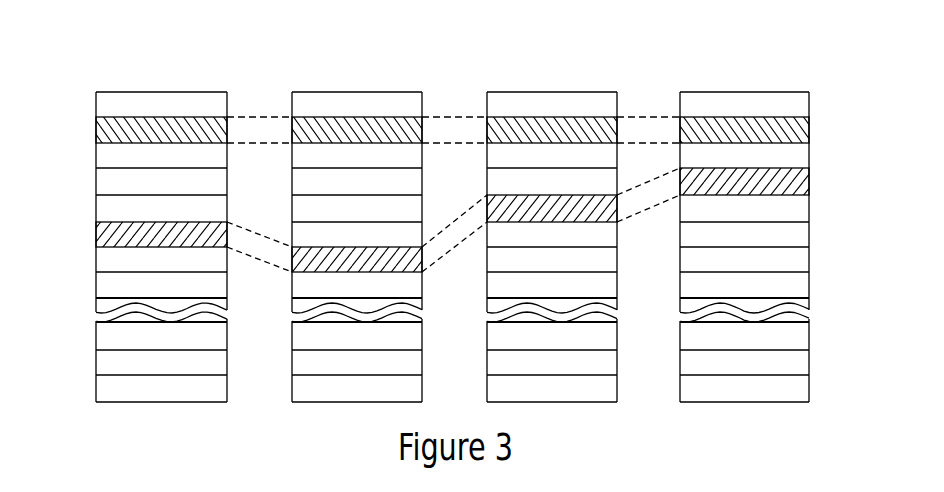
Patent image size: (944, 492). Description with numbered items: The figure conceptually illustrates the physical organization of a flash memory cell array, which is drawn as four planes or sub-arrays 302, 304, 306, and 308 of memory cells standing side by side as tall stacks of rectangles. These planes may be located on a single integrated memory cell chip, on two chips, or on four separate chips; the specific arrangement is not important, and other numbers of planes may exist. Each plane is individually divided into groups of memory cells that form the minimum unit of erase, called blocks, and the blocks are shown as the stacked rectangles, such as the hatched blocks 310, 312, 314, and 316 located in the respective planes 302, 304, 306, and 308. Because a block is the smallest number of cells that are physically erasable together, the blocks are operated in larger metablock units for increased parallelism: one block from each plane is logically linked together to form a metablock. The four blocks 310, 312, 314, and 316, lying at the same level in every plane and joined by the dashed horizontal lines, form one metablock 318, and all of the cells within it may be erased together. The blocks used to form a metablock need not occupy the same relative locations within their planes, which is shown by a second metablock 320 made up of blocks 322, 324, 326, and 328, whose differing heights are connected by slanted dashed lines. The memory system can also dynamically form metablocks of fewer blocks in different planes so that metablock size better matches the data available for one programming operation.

The plane 302 is at (139, 212).
The plane 304 is at (338, 212).
The plane 306 is at (527, 212).
The plane 308 is at (775, 212).
The block 310 is at (143, 132).
The block 312 is at (333, 132).
The block 314 is at (528, 132).
The block 316 is at (775, 128).
The metablock 318 is at (657, 115).
The second metablock 320 is at (652, 178).
The block 322 is at (137, 234).
The block 324 is at (330, 258).
The block 326 is at (538, 207).
The block 328 is at (775, 180).